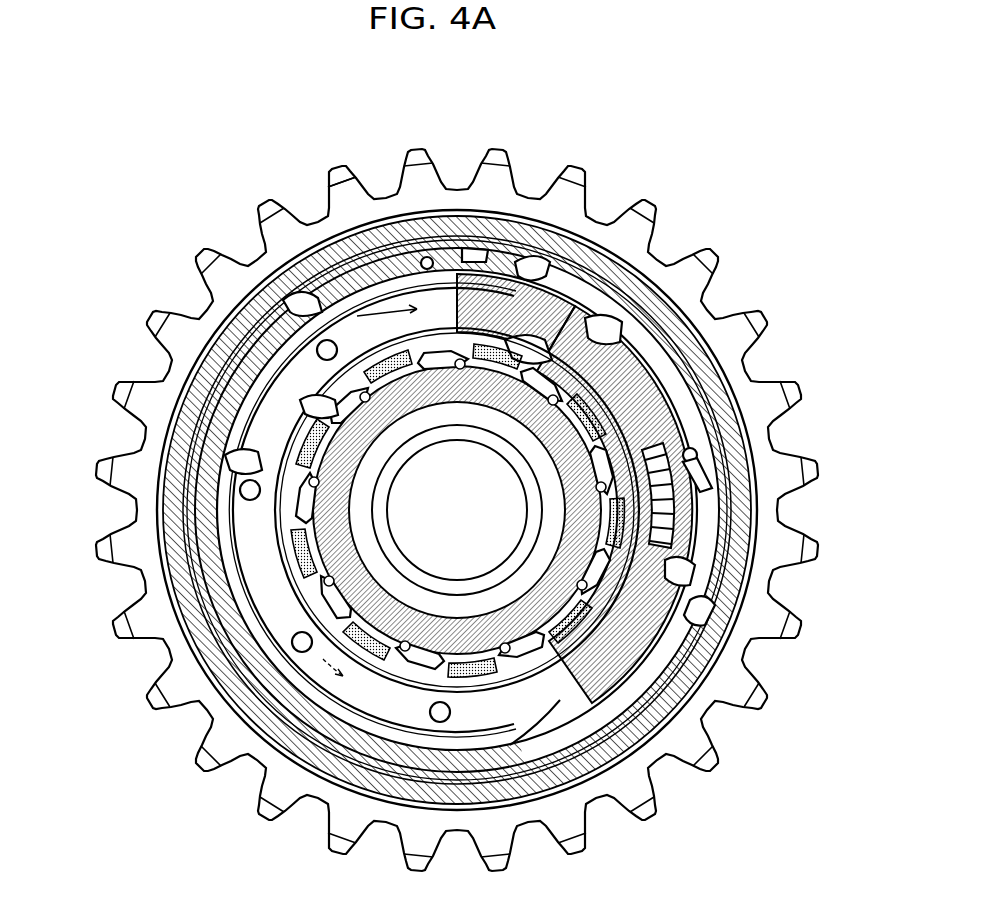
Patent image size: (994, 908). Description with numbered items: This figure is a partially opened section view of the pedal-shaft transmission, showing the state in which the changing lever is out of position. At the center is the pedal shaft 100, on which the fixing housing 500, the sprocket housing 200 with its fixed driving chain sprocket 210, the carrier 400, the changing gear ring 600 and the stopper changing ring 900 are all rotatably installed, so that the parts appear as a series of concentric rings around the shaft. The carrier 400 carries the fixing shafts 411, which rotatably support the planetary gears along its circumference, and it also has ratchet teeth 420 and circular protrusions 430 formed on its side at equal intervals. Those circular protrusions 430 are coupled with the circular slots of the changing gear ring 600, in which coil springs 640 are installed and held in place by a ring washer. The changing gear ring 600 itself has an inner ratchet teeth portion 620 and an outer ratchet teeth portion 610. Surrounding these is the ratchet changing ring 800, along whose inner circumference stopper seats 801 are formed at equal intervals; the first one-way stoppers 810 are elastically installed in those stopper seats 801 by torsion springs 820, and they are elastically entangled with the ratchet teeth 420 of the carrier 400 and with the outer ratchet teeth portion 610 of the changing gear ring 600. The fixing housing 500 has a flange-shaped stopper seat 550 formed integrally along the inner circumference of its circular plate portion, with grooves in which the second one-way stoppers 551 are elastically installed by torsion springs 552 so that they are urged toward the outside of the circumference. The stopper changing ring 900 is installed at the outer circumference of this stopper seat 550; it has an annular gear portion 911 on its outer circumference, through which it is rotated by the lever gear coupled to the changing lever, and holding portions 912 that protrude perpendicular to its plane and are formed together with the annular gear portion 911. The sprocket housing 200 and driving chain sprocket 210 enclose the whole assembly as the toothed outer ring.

The pedal shaft 100 is at (476, 522).
The sprocket housing 200 is at (377, 232).
The driving chain sprocket 210 is at (378, 190).
The carrier 400 is at (343, 675).
The fixing shafts 411 is at (223, 470).
The ratchet teeth 420 is at (215, 588).
The circular protrusions 430 is at (700, 600).
The fixing housing 500 is at (330, 350).
The stopper seat 550 is at (260, 453).
The second one-way stoppers 551 is at (335, 400).
The torsion springs 552 is at (700, 452).
The changing gear ring 600 is at (565, 260).
The outer ratchet teeth portion 610 is at (640, 330).
The inner ratchet teeth portion 620 is at (520, 318).
The coil springs 640 is at (700, 548).
The ratchet changing ring 800 is at (345, 238).
The stopper seats 801 is at (473, 250).
The first one-way stoppers 810 is at (320, 298).
The torsion springs 820 is at (427, 257).
The stopper changing ring 900 is at (708, 415).
The annular gear portion 911 is at (625, 650).
The holding portions 912 is at (600, 392).